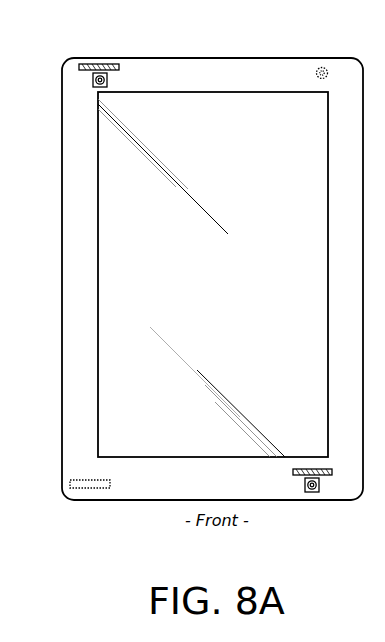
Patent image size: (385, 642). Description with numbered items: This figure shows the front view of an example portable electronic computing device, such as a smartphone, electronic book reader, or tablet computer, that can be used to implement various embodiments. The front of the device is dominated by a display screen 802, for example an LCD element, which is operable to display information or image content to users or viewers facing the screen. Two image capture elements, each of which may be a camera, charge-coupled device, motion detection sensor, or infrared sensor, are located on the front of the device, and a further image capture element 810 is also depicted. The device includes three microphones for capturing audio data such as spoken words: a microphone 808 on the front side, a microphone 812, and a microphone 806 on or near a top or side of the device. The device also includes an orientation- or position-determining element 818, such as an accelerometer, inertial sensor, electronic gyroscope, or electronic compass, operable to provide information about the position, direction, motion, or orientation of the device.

The display screen 802 is at (97, 197).
The microphone 806 is at (104, 62).
The microphone 808 is at (327, 478).
The image capture element 810 is at (316, 66).
The microphone 812 is at (112, 476).
The orientation- or position-determining element 818 is at (85, 486).